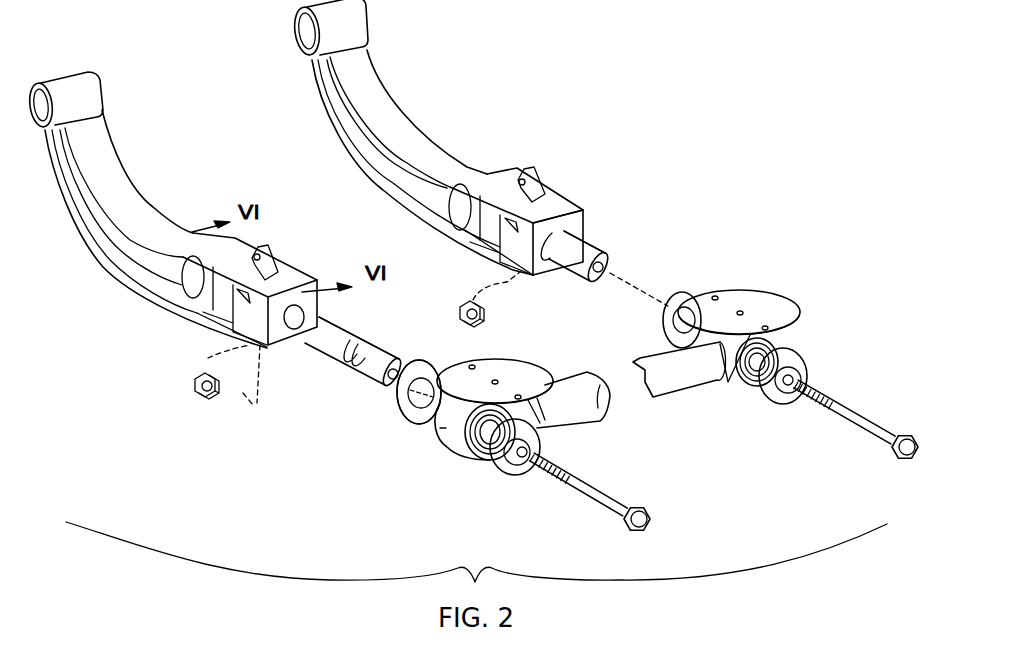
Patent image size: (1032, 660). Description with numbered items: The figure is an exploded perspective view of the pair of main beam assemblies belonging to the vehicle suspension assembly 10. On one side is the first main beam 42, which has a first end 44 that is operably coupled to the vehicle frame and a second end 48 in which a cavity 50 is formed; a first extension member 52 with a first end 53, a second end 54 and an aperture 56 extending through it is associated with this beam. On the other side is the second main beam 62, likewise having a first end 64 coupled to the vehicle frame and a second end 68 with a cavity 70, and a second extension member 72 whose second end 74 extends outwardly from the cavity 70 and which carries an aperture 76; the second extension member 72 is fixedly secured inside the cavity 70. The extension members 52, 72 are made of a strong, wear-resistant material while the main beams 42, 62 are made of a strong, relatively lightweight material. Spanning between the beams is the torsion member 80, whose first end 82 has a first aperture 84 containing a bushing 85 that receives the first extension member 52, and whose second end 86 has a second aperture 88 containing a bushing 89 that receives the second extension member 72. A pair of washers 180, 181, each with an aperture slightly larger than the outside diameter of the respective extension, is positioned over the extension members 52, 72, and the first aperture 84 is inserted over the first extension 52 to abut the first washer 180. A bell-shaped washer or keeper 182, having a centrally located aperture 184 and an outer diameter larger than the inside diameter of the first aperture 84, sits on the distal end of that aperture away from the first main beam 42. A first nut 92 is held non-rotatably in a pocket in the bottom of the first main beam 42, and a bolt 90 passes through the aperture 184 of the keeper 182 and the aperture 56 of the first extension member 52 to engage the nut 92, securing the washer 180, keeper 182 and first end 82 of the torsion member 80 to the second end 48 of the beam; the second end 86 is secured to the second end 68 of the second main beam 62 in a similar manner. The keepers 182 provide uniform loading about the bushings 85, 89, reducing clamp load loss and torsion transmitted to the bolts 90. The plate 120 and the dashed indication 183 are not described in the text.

The vehicle suspension assembly 10 is at (655, 81).
The first main beam 42 is at (143, 197).
The first end 44 is at (102, 88).
The second end 48 is at (188, 315).
The cavity 50 is at (297, 322).
The first extension member 52 is at (360, 357).
The first end 53 is at (340, 331).
The second end 54 is at (405, 360).
The aperture 56 is at (392, 384).
The second main beam 62 is at (418, 143).
The first end 64 is at (296, 42).
The second end 68 is at (518, 273).
The cavity 70 is at (585, 206).
The second extension member 72 is at (592, 237).
The second end 74 is at (592, 250).
The aperture 76 is at (612, 260).
The torsion member 80 is at (684, 391).
The first end 82 is at (443, 428).
The first aperture 84 is at (487, 462).
The bushing 85 is at (473, 457).
The second end 86 is at (730, 385).
The second aperture 88 is at (786, 353).
The bushing 89 is at (753, 392).
The bolt 90 is at (605, 493).
The first nut 92 is at (200, 397).
The mounting plate 120 is at (520, 366).
The washer 180 is at (410, 422).
The washer 181 is at (663, 342).
The keeper 182 is at (553, 425).
The nut alignment 183 is at (234, 375).
The aperture 184 is at (523, 458).